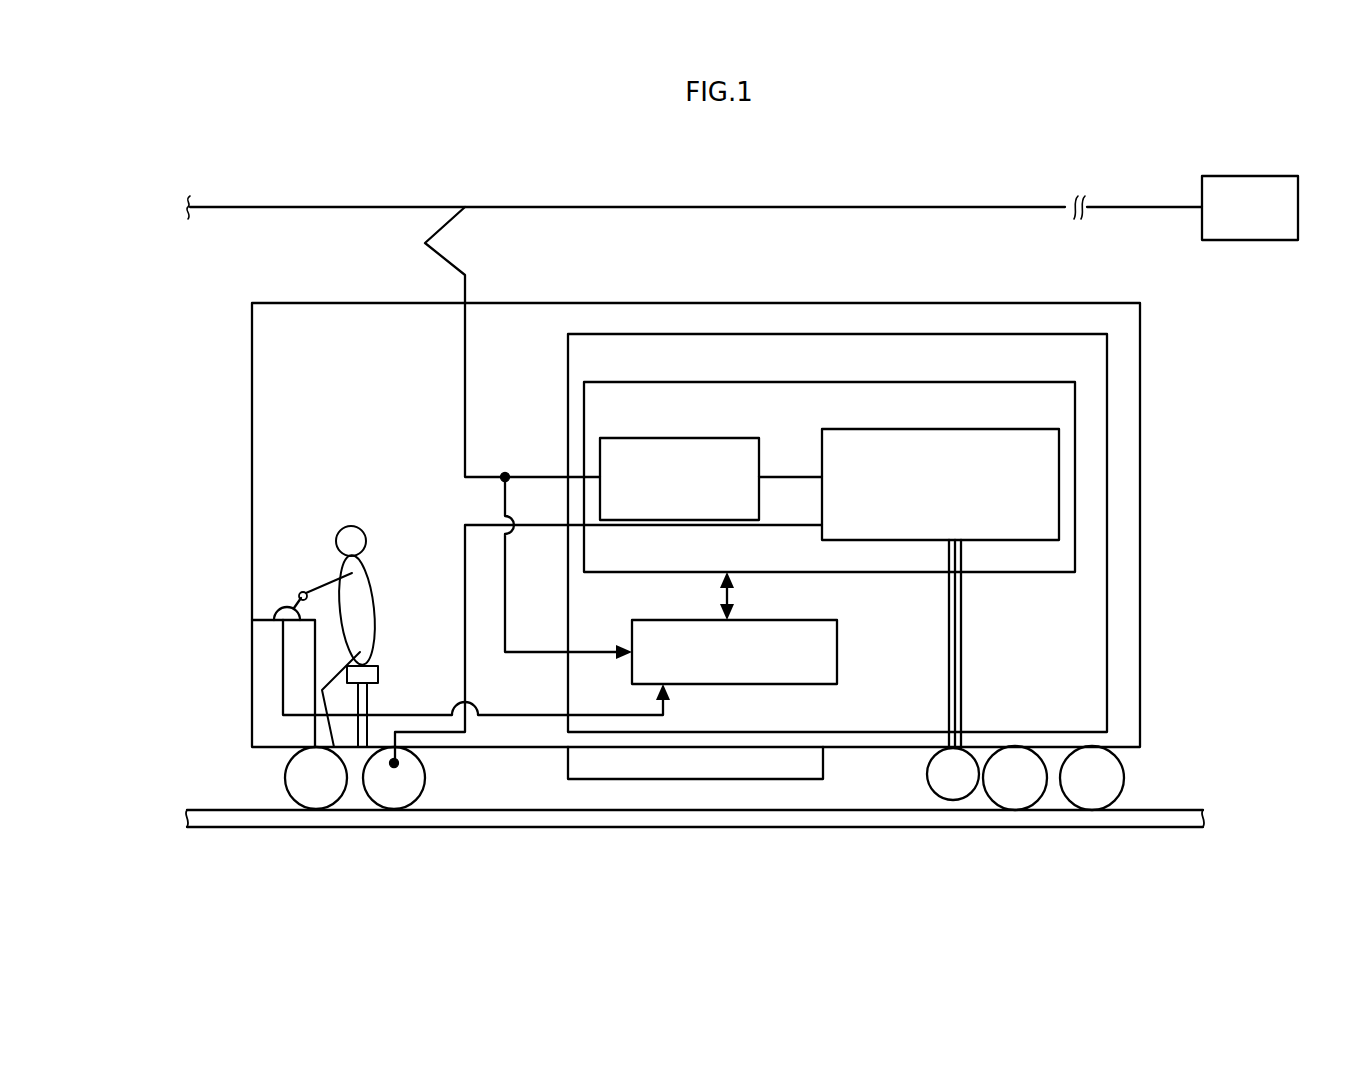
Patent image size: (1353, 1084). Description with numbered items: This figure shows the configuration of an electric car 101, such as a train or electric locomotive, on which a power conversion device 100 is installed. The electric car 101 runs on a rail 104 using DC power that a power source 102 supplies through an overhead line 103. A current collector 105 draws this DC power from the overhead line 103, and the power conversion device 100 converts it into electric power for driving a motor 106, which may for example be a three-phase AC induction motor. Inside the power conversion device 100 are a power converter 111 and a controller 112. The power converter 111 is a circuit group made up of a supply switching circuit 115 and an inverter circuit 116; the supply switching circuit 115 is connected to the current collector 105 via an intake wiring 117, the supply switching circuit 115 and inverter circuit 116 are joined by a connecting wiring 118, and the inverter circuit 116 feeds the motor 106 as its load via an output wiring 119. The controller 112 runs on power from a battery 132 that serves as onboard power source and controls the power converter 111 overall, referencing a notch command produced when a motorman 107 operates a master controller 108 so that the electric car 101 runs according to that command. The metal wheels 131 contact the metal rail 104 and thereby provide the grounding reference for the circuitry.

The power conversion device 100 is at (568, 352).
The electric car 101 is at (228, 287).
The power source 102 is at (1235, 176).
The overhead line 103 is at (218, 205).
The rail 104 is at (220, 828).
The current collector 105 is at (424, 238).
The motor 106 is at (930, 769).
The motorman 107 is at (358, 572).
The master controller 108 is at (276, 614).
The power converter 111 is at (990, 382).
The controller 112 is at (775, 620).
The supply switching circuit 115 is at (627, 437).
The inverter circuit 116 is at (878, 429).
The intake wiring 117 is at (552, 474).
The connecting wiring 118 is at (793, 475).
The output wiring 119 is at (962, 633).
The wheels 131 is at (315, 801).
The battery 132 is at (795, 781).